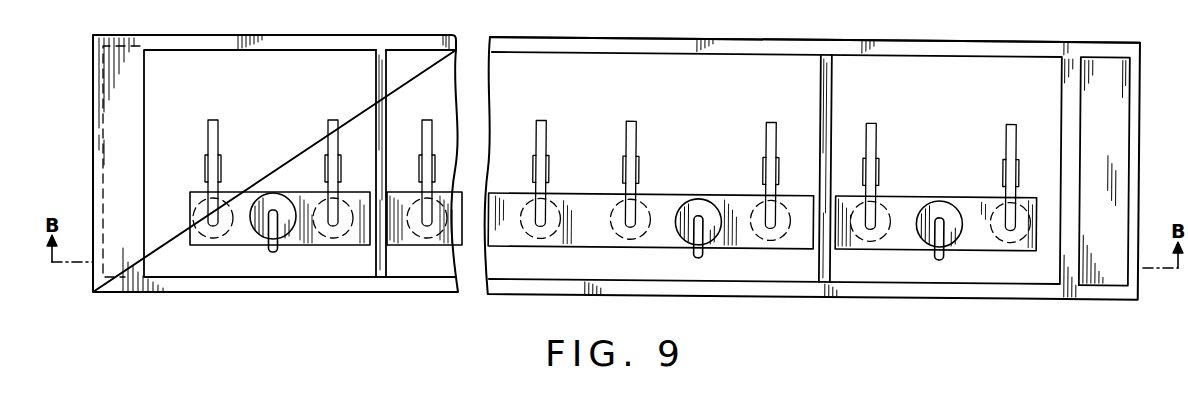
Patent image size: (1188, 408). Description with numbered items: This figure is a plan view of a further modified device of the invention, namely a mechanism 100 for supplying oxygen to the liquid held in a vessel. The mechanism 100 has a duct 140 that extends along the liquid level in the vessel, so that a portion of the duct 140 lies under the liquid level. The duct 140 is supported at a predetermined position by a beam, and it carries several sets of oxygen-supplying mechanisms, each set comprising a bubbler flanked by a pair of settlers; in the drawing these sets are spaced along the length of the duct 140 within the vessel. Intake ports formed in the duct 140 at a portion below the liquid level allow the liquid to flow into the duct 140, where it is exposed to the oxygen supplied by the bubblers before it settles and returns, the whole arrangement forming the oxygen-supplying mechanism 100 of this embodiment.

The mechanism for supplying oxygen 100 is at (553, 252).
The duct 140 is at (250, 246).